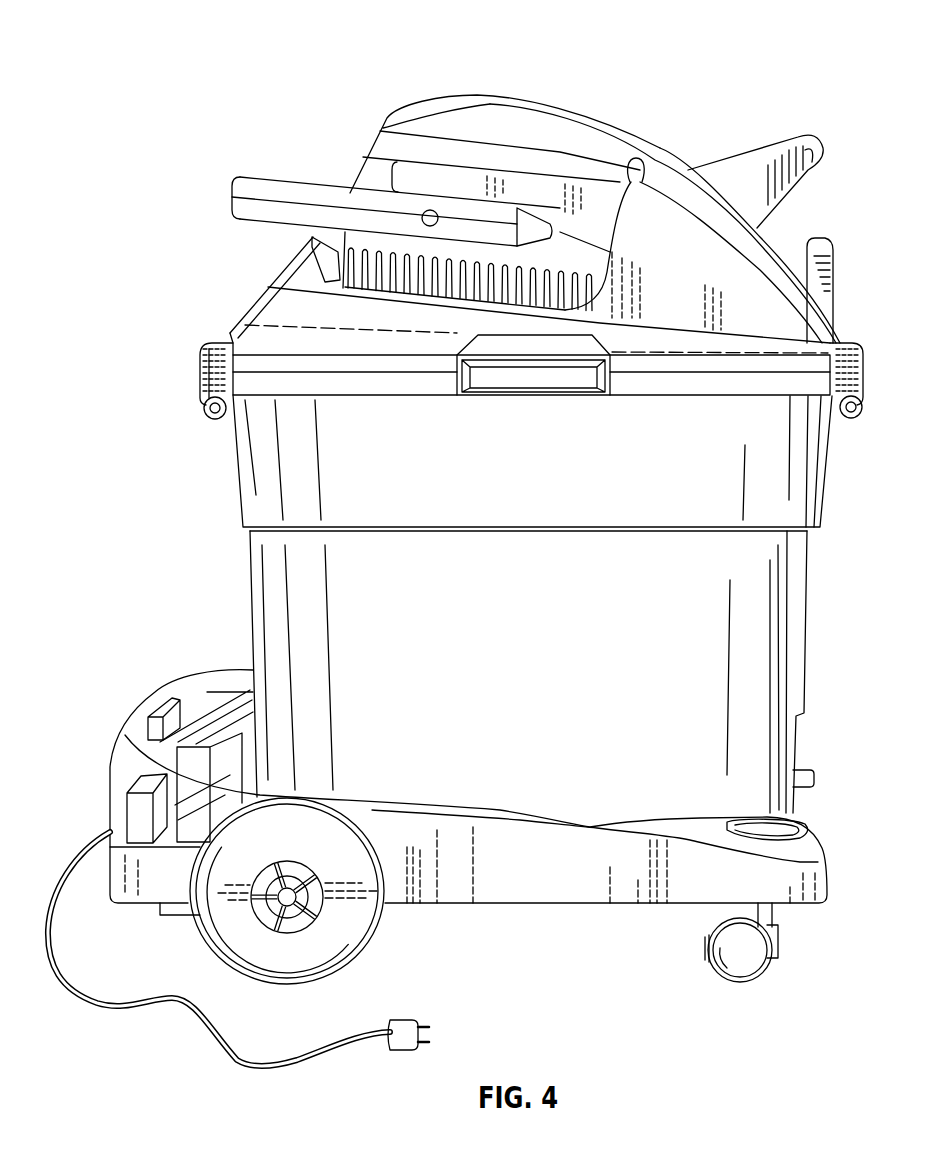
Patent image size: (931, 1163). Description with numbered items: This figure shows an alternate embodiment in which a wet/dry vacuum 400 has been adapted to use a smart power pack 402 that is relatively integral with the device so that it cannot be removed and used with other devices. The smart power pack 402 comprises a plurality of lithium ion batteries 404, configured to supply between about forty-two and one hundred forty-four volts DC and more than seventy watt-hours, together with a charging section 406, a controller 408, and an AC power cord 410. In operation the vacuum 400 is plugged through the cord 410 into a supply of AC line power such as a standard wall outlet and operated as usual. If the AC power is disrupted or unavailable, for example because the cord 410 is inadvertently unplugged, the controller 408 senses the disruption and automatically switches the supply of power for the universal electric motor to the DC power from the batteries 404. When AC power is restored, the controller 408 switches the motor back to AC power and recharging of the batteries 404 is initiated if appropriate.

The wet/dry vacuum 400 is at (789, 49).
The smart power pack 402 is at (137, 708).
The lithium ion batteries 404 is at (233, 708).
The charging section 406 is at (145, 817).
The controller 408 is at (170, 712).
The AC power cord 410 is at (371, 1032).